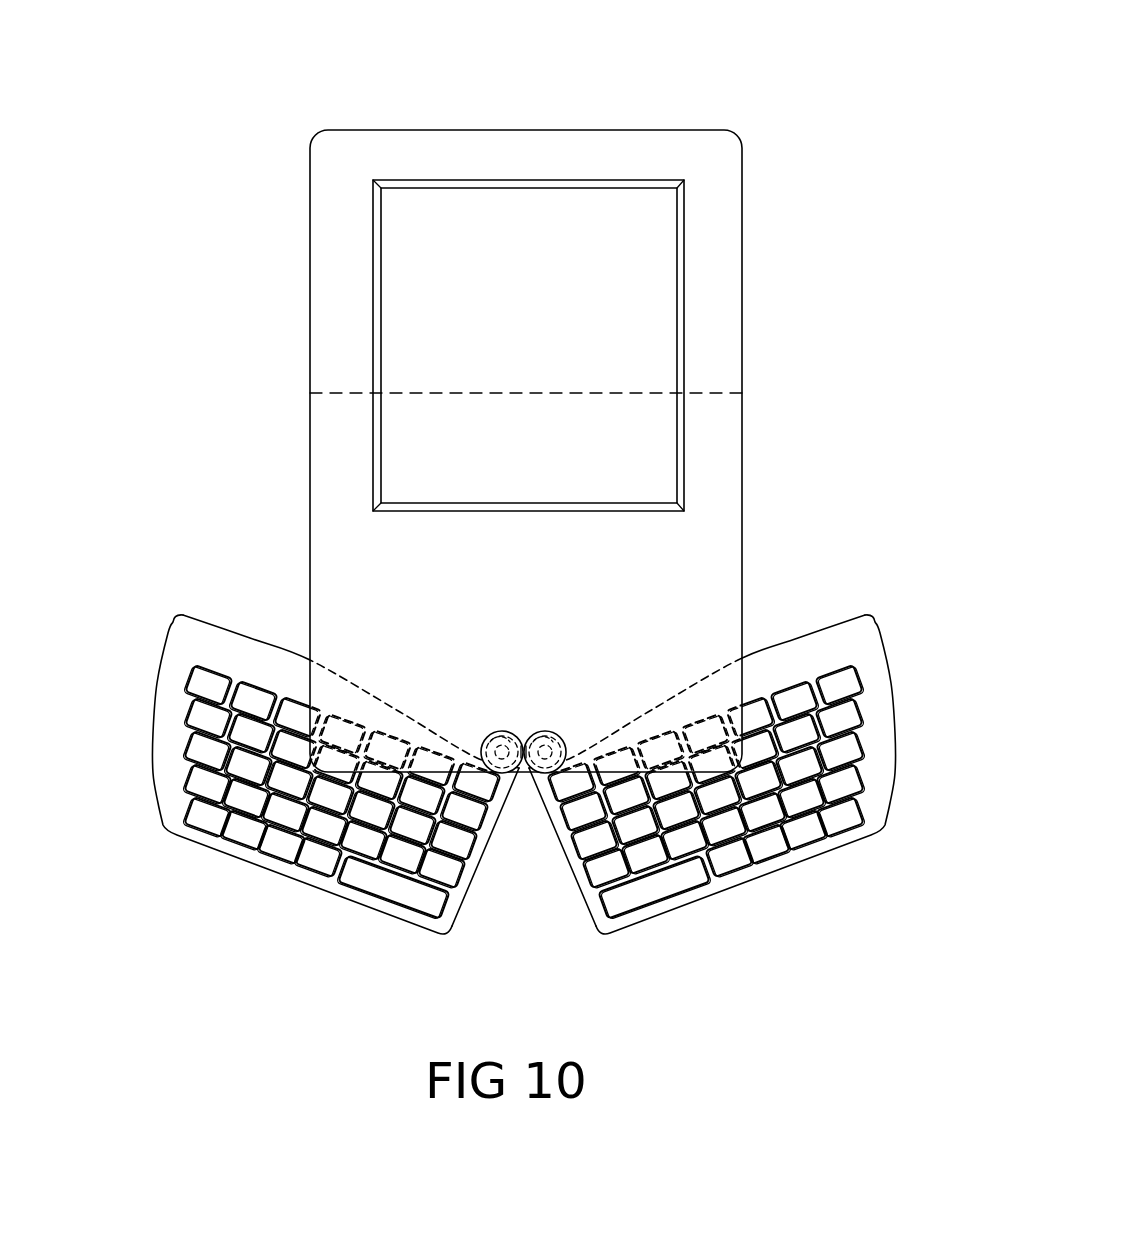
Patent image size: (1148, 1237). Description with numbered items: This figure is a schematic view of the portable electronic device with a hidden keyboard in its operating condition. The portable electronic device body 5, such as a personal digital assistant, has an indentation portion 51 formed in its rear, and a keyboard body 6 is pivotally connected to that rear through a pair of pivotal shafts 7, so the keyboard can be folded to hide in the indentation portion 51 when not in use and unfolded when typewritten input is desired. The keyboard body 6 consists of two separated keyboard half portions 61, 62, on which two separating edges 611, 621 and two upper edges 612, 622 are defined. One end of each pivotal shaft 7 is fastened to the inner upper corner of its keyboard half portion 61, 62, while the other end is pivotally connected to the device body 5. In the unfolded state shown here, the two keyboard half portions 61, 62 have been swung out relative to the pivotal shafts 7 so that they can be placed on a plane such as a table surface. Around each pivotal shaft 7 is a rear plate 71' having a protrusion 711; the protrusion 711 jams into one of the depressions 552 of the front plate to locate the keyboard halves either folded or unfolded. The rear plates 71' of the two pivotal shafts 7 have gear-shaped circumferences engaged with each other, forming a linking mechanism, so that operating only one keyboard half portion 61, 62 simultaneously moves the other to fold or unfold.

The portable electronic device body 5 is at (562, 386).
The indentation portion 51 is at (718, 530).
The depressions 552 is at (484, 744).
The keyboard body 6 is at (500, 767).
The keyboard half portion 61 is at (325, 755).
The separating edge 611 is at (488, 848).
The upper edge 612 is at (262, 642).
The keyboard half portion 62 is at (726, 773).
The separating edge 621 is at (576, 890).
The upper edge 622 is at (786, 646).
The pivotal shaft 7 is at (506, 730).
The rear plate 71' is at (525, 688).
The protrusion 711 is at (494, 732).